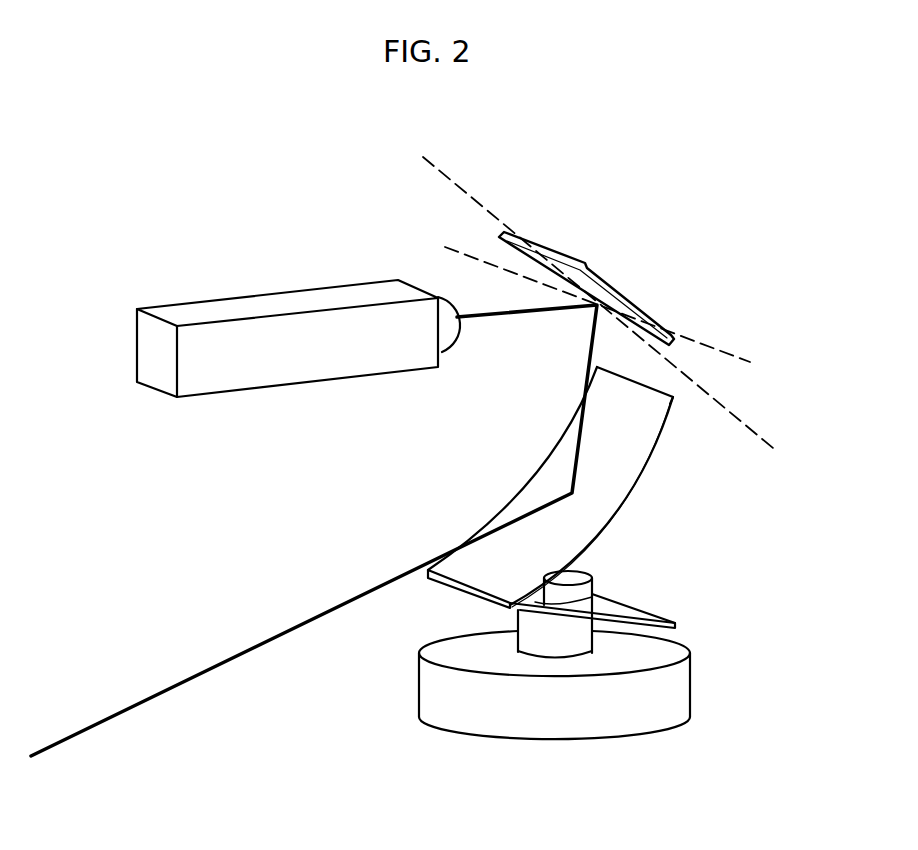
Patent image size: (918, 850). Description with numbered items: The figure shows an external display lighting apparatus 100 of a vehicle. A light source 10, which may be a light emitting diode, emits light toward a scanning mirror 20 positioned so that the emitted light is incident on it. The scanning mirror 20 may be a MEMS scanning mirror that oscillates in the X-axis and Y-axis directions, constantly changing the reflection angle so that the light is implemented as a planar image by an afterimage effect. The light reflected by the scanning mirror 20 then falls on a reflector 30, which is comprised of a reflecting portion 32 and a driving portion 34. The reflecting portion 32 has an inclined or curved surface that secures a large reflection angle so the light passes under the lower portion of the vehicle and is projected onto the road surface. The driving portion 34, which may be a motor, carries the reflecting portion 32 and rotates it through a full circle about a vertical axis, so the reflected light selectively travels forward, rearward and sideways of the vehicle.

The external display lighting apparatus 100 is at (742, 143).
The light source 10 is at (220, 313).
The scanning mirror 20 is at (627, 301).
The reflector 30 is at (767, 528).
The reflecting portion 32 is at (640, 481).
The driving portion 34 is at (680, 683).